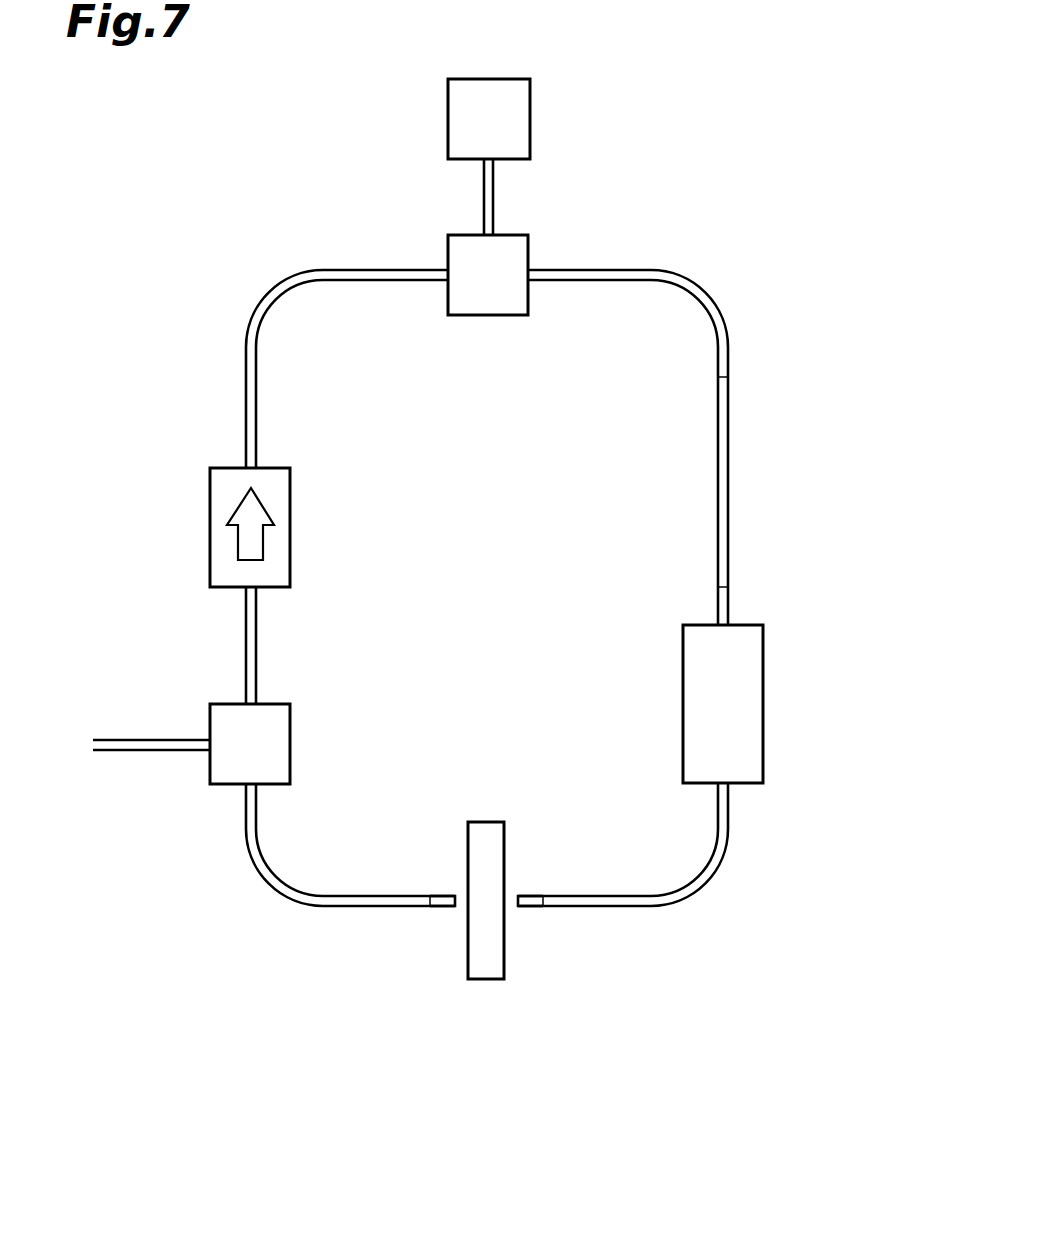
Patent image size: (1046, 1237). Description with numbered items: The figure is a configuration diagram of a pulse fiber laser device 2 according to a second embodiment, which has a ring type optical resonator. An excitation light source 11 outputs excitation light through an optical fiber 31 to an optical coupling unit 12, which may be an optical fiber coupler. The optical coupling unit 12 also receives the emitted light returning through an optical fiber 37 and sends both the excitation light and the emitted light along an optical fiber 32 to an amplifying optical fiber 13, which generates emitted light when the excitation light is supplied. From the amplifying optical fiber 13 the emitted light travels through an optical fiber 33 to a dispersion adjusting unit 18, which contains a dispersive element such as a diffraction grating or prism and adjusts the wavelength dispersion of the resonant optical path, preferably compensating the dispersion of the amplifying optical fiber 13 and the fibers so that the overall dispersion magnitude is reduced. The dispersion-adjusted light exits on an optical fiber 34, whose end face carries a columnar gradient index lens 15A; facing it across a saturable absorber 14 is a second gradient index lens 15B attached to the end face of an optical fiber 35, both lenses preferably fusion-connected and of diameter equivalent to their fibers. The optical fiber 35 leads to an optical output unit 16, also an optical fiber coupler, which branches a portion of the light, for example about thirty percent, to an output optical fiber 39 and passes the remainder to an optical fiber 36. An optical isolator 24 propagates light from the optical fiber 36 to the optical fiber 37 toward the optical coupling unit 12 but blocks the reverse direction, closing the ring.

The pulse fiber laser device 2 is at (756, 130).
The excitation light source 11 is at (530, 112).
The optical coupling unit 12 is at (483, 316).
The amplifying optical fiber 13 is at (729, 487).
The saturable absorber 14 is at (484, 981).
The gradient index lens 15A is at (524, 908).
The gradient index lens 15B is at (443, 908).
The optical output unit 16 is at (291, 747).
The dispersion adjusting unit 18 is at (764, 708).
The optical isolator 24 is at (210, 530).
The optical fiber 31 is at (494, 191).
The optical fiber 32 is at (717, 300).
The optical fiber 33 is at (730, 603).
The optical fiber 34 is at (706, 884).
The optical fiber 35 is at (290, 902).
The optical fiber 36 is at (246, 652).
The optical fiber 37 is at (246, 374).
The optical fiber 39 is at (143, 752).